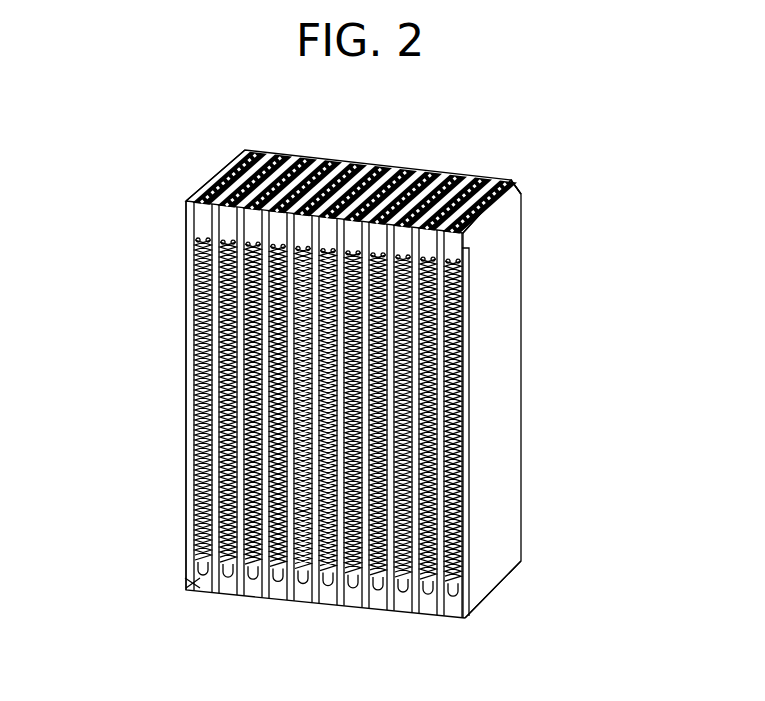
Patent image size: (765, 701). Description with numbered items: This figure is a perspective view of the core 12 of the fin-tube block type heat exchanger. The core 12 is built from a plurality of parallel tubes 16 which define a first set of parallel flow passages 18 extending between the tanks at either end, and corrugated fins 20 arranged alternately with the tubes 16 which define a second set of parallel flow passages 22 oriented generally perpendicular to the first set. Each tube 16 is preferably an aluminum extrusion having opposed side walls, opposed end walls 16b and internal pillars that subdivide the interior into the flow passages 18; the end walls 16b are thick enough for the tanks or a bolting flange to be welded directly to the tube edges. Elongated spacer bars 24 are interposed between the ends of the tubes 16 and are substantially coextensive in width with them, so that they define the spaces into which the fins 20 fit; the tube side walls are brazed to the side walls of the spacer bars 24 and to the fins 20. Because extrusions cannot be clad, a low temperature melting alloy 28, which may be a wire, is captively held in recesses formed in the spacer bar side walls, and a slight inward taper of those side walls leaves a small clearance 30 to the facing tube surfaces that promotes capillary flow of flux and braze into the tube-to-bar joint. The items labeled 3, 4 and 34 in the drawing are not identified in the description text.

The core 12 is at (566, 417).
The heat transfer section 3 is at (318, 190).
The end bar 4 is at (475, 225).
The tubes 16 is at (466, 200).
The end walls 16b is at (250, 147).
The first set of parallel flow passages 18 is at (399, 176).
The corrugated fins 20 is at (218, 284).
The second set of parallel flow passages 22 is at (188, 502).
The spacer bars 24 is at (439, 172).
The low temperature melting alloy 28 is at (237, 142).
The clearance 30 is at (185, 384).
The end plate edge 34 is at (513, 205).